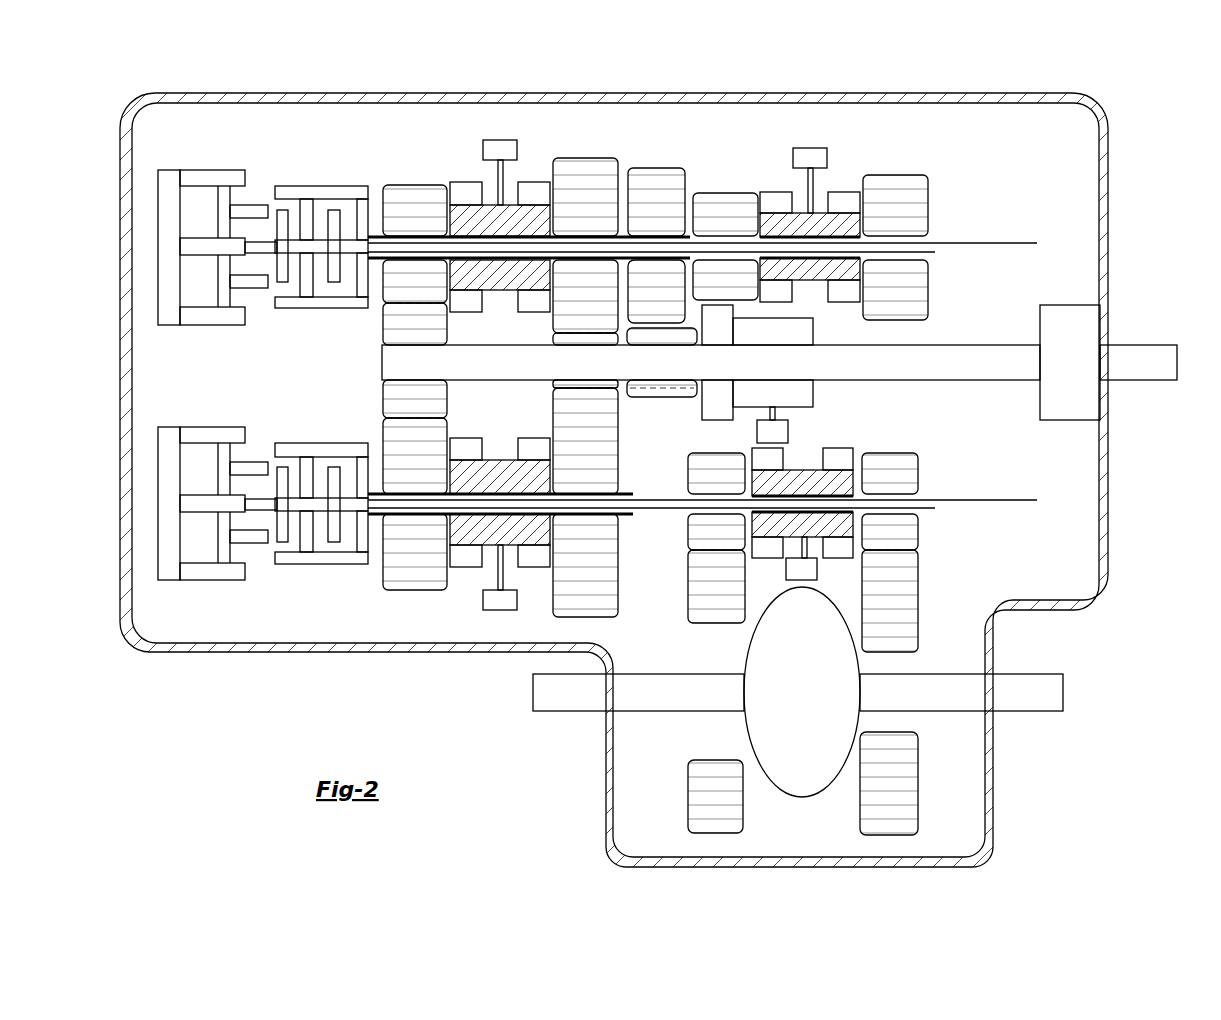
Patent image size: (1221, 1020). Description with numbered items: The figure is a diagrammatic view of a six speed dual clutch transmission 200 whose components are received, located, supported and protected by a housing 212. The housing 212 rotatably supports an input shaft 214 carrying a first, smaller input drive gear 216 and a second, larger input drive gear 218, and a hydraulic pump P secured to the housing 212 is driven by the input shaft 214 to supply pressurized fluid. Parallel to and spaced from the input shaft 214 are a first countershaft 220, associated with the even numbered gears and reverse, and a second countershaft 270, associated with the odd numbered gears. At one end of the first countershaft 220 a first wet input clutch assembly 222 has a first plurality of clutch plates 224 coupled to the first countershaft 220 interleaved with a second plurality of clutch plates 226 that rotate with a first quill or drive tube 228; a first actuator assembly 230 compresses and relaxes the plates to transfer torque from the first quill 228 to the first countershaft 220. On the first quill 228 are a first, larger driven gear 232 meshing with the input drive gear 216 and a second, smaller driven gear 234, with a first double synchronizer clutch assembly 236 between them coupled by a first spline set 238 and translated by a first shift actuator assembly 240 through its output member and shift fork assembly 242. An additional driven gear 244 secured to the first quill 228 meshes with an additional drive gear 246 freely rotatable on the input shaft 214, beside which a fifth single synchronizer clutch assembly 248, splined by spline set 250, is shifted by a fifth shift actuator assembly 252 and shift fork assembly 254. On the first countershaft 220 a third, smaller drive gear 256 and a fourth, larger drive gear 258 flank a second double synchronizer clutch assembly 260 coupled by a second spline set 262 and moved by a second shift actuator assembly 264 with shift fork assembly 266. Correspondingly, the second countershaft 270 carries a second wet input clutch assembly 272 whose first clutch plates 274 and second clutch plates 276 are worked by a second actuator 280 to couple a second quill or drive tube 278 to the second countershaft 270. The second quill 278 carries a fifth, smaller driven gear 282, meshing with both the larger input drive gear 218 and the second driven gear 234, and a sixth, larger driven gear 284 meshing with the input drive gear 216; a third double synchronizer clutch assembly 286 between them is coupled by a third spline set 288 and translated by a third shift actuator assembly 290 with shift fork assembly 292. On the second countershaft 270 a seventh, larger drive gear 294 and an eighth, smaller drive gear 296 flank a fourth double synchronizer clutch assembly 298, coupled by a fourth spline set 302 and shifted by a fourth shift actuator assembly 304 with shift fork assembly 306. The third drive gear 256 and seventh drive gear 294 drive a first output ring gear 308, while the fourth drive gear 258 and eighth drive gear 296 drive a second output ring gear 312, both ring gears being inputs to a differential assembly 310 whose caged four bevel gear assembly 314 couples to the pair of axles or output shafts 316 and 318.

The six speed dual clutch transmission 200 is at (670, 472).
The housing 212 is at (290, 653).
The input shaft 214 is at (1143, 344).
The first, smaller input drive gear 216 is at (616, 390).
The second, larger input drive gear 218 is at (378, 360).
The first countershaft 220 is at (960, 242).
The first wet input clutch assembly 222 is at (314, 228).
The first plurality of clutch plates or discs 224 is at (283, 208).
The second plurality of clutch plates or discs 226 is at (307, 290).
The first quill or drive tube 228 is at (685, 234).
The first actuator assembly 230 is at (218, 165).
The first, larger driven gear 232 is at (585, 157).
The second, smaller driven gear 234 is at (413, 184).
The first double synchronizer clutch assembly 236 is at (500, 276).
The first interengaging male and female spline set 238 is at (495, 262).
The first shift actuator assembly 240 is at (467, 136).
The output member and shift fork assembly 242 is at (497, 178).
The additional driven gear 244 is at (657, 167).
The additional drive gear 246 is at (678, 398).
The additional or fifth (single) synchronizer clutch assembly 248 is at (817, 395).
The additional or fifth interengaging male and female spline set 250 is at (737, 326).
The additional or fifth shift actuator assembly 252 is at (781, 425).
The output member and shift fork assembly 254 is at (790, 408).
The third, smaller drive gear 256 is at (727, 192).
The fourth, larger drive gear 258 is at (893, 174).
The second double synchronizer clutch assembly 260 is at (854, 234).
The second interengaging male and female spline set 262 is at (830, 262).
The second shift actuator assembly 264 is at (776, 139).
The output member and shift fork assembly 266 is at (805, 185).
The second countershaft 270 is at (988, 499).
The second wet input clutch assembly 272 is at (286, 503).
The first plurality of clutch plates or discs 274 is at (283, 545).
The second plurality of clutch plates or discs 276 is at (300, 460).
The second quill or drive tube 278 is at (633, 492).
The second actuator 280 is at (218, 424).
The fifth, smaller driven gear 282 is at (400, 592).
The sixth, larger driven gear 284 is at (620, 600).
The third double synchronizer clutch assembly 286 is at (480, 507).
The third interengaging male and female spline set 288 is at (498, 462).
The third shift actuator assembly 290 is at (500, 616).
The output member and shift fork assembly 292 is at (508, 578).
The seventh, larger drive gear 294 is at (688, 530).
The eighth, smaller drive gear 296 is at (915, 466).
The fourth double synchronizer clutch assembly 298 is at (842, 487).
The fourth interengaging male and female spline set 302 is at (800, 484).
The fourth shift actuator assembly 304 is at (880, 577).
The output member and shift fork assembly 306 is at (812, 548).
The first output or ring gear 308 is at (688, 785).
The differential assembly 310 is at (778, 722).
The second output or ring gear 312 is at (918, 790).
The caged, four bevel gear assembly 314 is at (807, 798).
The axle or output shaft 316 is at (560, 712).
The axle or output shaft 318 is at (1027, 713).
The hydraulic pump P is at (1090, 408).